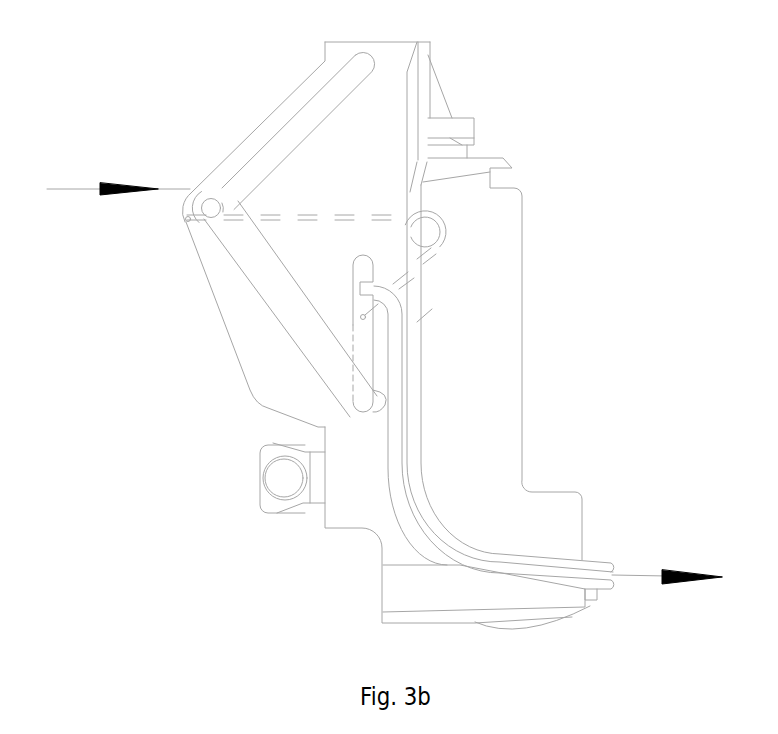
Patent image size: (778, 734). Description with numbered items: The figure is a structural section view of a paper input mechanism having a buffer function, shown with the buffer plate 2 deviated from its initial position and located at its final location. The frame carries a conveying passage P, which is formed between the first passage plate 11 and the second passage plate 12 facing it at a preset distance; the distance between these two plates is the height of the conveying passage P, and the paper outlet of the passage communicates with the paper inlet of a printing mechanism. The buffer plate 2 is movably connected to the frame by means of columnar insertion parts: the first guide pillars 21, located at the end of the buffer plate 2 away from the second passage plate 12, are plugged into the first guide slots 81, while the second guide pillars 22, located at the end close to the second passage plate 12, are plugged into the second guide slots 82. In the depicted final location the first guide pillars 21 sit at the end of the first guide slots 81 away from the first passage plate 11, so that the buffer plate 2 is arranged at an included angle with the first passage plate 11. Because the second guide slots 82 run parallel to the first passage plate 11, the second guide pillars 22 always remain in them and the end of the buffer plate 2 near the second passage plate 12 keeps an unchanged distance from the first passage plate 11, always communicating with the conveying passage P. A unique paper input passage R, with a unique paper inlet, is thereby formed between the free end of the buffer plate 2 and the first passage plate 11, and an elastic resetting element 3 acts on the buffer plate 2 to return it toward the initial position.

The first guide slot 81 is at (335, 92).
The paper input passage R is at (408, 118).
The elastic resetting element 3 is at (372, 193).
The first guide pillar 21 is at (211, 208).
The first passage plate 11 is at (415, 327).
The buffer plate 2 is at (265, 274).
The conveying passage P is at (403, 437).
The second guide slot 82 is at (362, 352).
The second guide pillar 22 is at (320, 426).
The second passage plate 12 is at (393, 466).